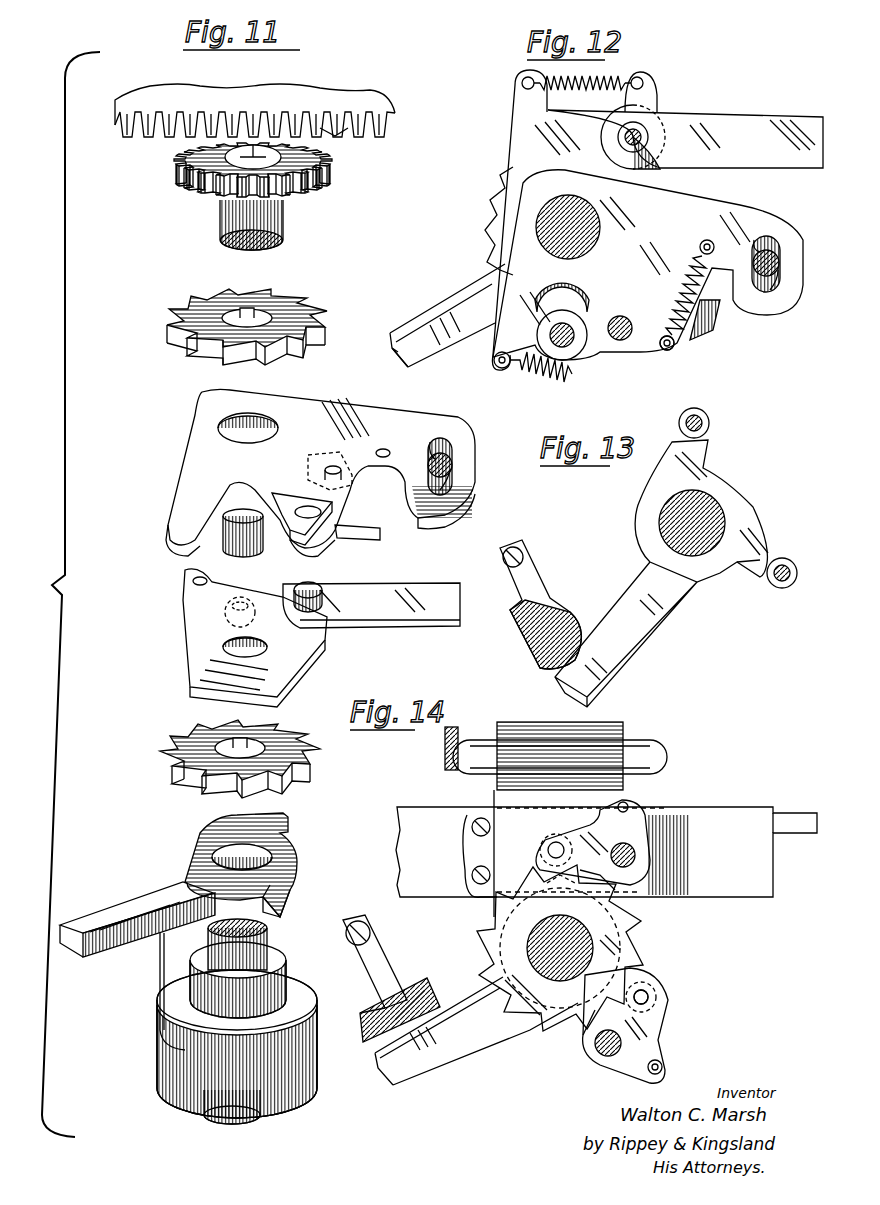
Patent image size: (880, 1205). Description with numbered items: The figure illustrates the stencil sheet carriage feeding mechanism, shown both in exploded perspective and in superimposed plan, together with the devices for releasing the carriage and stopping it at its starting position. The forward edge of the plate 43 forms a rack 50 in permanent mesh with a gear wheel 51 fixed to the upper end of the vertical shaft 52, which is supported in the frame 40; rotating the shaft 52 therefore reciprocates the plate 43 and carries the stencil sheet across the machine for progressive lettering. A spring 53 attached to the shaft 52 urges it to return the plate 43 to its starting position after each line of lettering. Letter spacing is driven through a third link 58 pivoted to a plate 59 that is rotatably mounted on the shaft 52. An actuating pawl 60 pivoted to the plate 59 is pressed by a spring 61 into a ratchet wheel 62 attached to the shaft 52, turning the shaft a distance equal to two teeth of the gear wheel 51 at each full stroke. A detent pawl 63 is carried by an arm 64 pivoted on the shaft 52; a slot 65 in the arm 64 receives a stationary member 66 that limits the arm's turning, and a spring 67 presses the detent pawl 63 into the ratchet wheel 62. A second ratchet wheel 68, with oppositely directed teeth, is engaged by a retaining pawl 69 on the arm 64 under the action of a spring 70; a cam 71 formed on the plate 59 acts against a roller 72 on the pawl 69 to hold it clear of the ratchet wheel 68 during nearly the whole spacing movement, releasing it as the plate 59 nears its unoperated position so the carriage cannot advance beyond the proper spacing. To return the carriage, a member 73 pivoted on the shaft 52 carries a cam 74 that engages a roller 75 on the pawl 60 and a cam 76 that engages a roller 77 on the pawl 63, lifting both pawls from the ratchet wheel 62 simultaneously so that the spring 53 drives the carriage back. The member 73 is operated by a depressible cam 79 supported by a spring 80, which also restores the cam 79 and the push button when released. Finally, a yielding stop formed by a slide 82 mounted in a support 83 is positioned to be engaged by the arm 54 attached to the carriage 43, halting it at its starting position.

In FIG. 14, the frame 40 is at (712, 822).
In FIG. 11, the plate 43 is at (330, 104).
In FIG. 11, the rack 50 is at (345, 140).
In FIG. 11, the gear wheel 51 is at (315, 190).
In FIG. 11, the vertical shaft 52 is at (284, 226).
In FIG. 12, the vertical shaft 52 is at (602, 228).
In FIG. 13, the vertical shaft 52 is at (700, 560).
In FIG. 14, the vertical shaft 52 is at (572, 955).
In FIG. 11, the spring 53 is at (400, 612).
In FIG. 14, the arm 54 is at (445, 765).
In FIG. 12, the third link 58 is at (745, 118).
In FIG. 11, the plate 59 is at (200, 603).
In FIG. 12, the plate 59 is at (525, 138).
In FIG. 14, the plate 59 is at (499, 923).
In FIG. 11, the actuating pawl 60 is at (322, 588).
In FIG. 12, the actuating pawl 60 is at (643, 102).
In FIG. 14, the actuating pawl 60 is at (597, 812).
In FIG. 12, the spring 61 is at (596, 78).
In FIG. 11, the ratchet wheel 62 is at (298, 780).
In FIG. 12, the ratchet wheel 62 is at (495, 215).
In FIG. 14, the ratchet wheel 62 is at (493, 912).
In FIG. 11, the detent pawl 63 is at (347, 542).
In FIG. 12, the detent pawl 63 is at (668, 352).
In FIG. 14, the detent pawl 63 is at (648, 1030).
In FIG. 12, the arm 64 is at (396, 373).
In FIG. 11, the slot 65 is at (450, 440).
In FIG. 12, the slot 65 is at (782, 245).
In FIG. 11, the stationary member 66 is at (452, 468).
In FIG. 12, the stationary member 66 is at (782, 268).
In FIG. 11, the spring 67 is at (362, 412).
In FIG. 12, the spring 67 is at (705, 205).
In FIG. 11, the ratchet wheel 68 is at (280, 294).
In FIG. 11, the retaining pawl 69 is at (290, 500).
In FIG. 12, the spring 70 is at (548, 380).
In FIG. 11, the cam 71 is at (355, 494).
In FIG. 12, the cam 71 is at (575, 305).
In FIG. 11, the roller 72 is at (245, 556).
In FIG. 12, the roller 72 is at (575, 345).
In FIG. 11, the member 73 is at (130, 905).
In FIG. 12, the member 73 is at (455, 345).
In FIG. 13, the member 73 is at (625, 645).
In FIG. 14, the member 73 is at (458, 1042).
In FIG. 11, the cam 74 is at (270, 822).
In FIG. 13, the cam 74 is at (690, 455).
In FIG. 14, the cam 74 is at (599, 890).
In FIG. 11, the roller 75 is at (255, 612).
In FIG. 13, the roller 75 is at (711, 423).
In FIG. 14, the roller 75 is at (561, 888).
In FIG. 11, the cam 76 is at (292, 898).
In FIG. 13, the cam 76 is at (765, 552).
In FIG. 14, the cam 76 is at (607, 1007).
In FIG. 13, the roller 77 is at (781, 590).
In FIG. 14, the roller 77 is at (656, 998).
In FIG. 13, the cam 79 is at (530, 655).
In FIG. 14, the cam 79 is at (430, 988).
In FIG. 13, the spring 80 is at (525, 557).
In FIG. 14, the spring 80 is at (370, 940).
In FIG. 14, the slide 82 is at (650, 746).
In FIG. 14, the support 83 is at (600, 725).